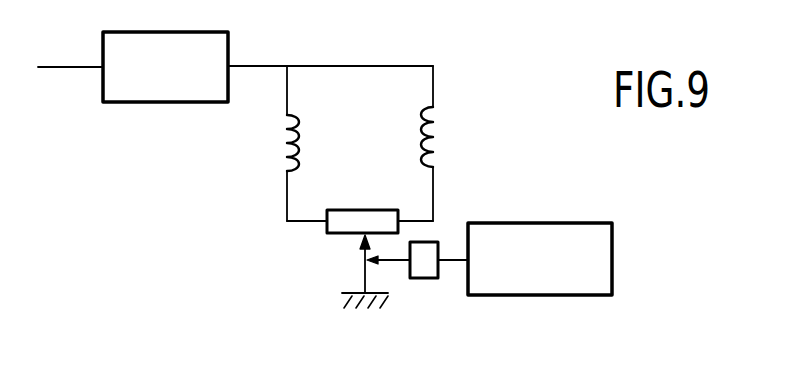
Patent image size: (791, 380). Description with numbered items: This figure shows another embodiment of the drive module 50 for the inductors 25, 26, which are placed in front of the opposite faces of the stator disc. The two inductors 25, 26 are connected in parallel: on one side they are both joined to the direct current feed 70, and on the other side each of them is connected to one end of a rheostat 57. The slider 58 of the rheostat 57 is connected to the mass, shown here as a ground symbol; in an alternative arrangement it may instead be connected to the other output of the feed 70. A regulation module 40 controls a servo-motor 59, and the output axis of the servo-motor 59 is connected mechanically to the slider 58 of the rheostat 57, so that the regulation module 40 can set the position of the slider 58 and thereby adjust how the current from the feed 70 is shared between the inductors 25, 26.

The direct current feed 70 is at (137, 103).
The inductor 26 is at (303, 128).
The inductor 25 is at (436, 130).
The rheostat 57 is at (364, 209).
The slider 58 is at (362, 258).
The servo-motor 59 is at (424, 279).
The regulation module 40 is at (613, 258).
The drive module 50 is at (288, 297).